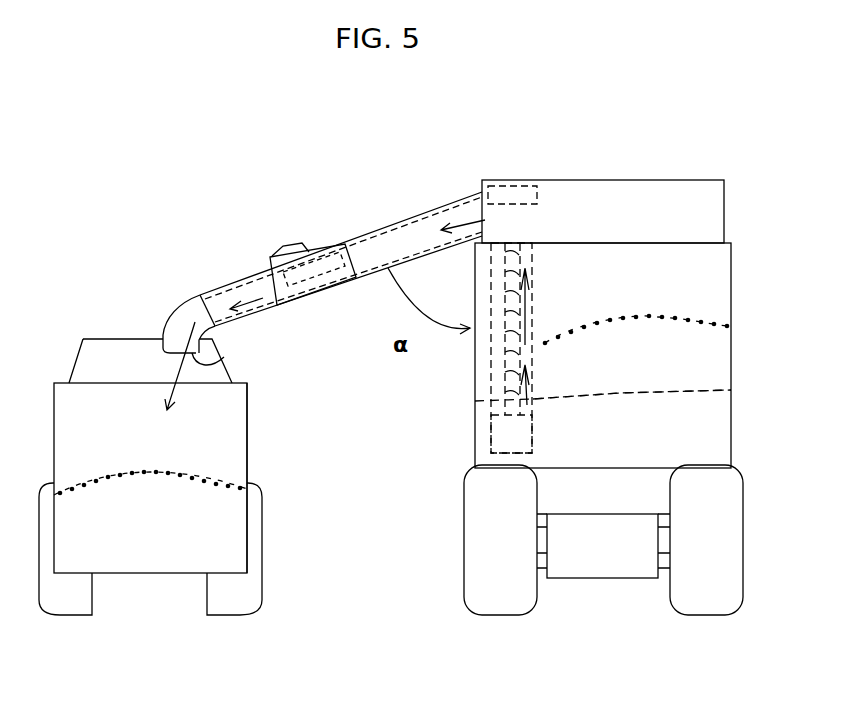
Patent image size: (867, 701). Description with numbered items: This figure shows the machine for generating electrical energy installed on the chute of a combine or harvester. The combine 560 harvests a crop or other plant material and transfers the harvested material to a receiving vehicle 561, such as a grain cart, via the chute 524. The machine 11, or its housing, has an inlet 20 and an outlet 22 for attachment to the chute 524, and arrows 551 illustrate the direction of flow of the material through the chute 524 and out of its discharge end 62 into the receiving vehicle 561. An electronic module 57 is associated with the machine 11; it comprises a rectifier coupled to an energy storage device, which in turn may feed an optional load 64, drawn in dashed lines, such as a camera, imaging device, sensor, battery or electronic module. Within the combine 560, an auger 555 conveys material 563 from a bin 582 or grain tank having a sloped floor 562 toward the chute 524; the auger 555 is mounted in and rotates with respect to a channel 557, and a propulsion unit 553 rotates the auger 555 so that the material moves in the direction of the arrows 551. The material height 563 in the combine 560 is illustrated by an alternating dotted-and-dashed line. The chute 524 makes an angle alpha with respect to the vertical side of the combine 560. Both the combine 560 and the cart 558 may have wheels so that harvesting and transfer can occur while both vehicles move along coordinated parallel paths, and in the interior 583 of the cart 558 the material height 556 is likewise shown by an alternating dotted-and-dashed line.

The machine 11 is at (300, 240).
The inlet 20 is at (347, 244).
The outlet 22 is at (258, 277).
The electronic module 57 is at (289, 249).
The outlet 62 is at (212, 360).
The load 64 is at (506, 186).
The chute 524 is at (217, 286).
The arrow 551 is at (260, 301).
The propulsion unit 553 is at (491, 440).
The auger 555 is at (487, 357).
The material height 556 is at (202, 482).
The channel 557 is at (475, 401).
The cart 558 is at (247, 442).
The combine 560 is at (682, 188).
The receiving vehicle 561 is at (95, 345).
The sloped floor 562 is at (667, 407).
The material height 563 is at (657, 316).
The bin 582 is at (693, 290).
The interior 583 is at (227, 434).